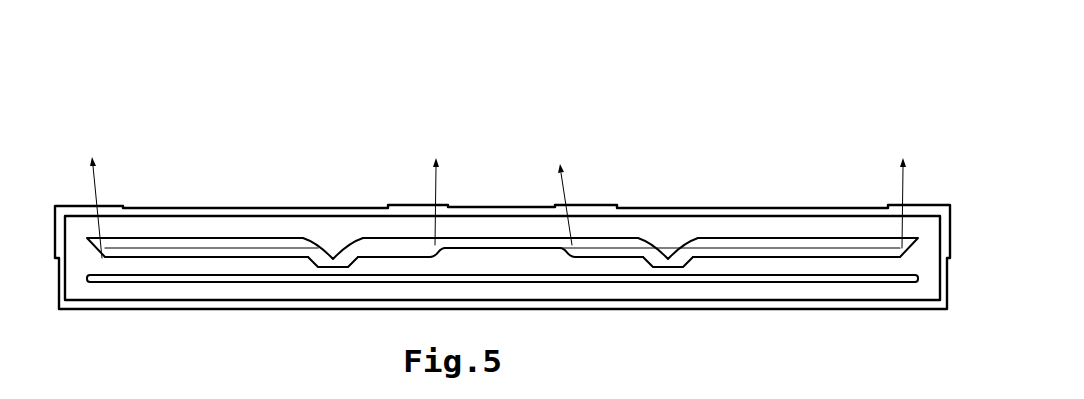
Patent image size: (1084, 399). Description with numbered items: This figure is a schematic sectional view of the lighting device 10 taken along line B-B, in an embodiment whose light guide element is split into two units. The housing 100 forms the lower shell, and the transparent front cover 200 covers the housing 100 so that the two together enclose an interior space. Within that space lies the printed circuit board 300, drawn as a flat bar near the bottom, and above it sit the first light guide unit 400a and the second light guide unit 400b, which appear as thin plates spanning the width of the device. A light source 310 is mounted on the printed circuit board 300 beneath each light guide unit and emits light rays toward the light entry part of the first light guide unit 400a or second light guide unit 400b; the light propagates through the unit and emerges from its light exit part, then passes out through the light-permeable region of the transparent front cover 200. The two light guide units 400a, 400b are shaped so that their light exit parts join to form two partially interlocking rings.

The lighting device 10 is at (473, 114).
The housing 100 is at (893, 302).
The transparent front cover 200 is at (790, 212).
The printed circuit board 300 is at (775, 276).
The light source 310 is at (340, 268).
The first light guide unit 400a is at (208, 236).
The second light guide unit 400b is at (707, 242).